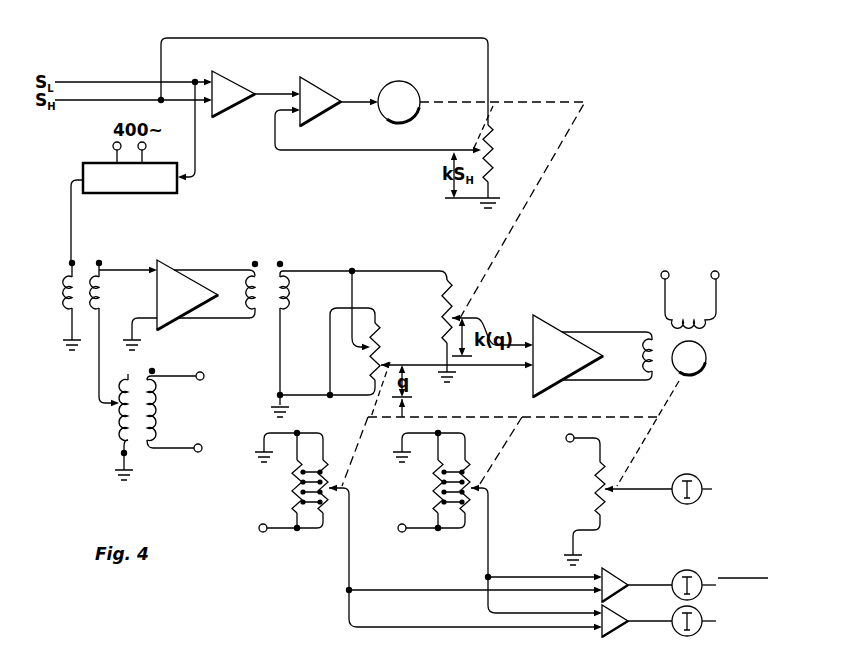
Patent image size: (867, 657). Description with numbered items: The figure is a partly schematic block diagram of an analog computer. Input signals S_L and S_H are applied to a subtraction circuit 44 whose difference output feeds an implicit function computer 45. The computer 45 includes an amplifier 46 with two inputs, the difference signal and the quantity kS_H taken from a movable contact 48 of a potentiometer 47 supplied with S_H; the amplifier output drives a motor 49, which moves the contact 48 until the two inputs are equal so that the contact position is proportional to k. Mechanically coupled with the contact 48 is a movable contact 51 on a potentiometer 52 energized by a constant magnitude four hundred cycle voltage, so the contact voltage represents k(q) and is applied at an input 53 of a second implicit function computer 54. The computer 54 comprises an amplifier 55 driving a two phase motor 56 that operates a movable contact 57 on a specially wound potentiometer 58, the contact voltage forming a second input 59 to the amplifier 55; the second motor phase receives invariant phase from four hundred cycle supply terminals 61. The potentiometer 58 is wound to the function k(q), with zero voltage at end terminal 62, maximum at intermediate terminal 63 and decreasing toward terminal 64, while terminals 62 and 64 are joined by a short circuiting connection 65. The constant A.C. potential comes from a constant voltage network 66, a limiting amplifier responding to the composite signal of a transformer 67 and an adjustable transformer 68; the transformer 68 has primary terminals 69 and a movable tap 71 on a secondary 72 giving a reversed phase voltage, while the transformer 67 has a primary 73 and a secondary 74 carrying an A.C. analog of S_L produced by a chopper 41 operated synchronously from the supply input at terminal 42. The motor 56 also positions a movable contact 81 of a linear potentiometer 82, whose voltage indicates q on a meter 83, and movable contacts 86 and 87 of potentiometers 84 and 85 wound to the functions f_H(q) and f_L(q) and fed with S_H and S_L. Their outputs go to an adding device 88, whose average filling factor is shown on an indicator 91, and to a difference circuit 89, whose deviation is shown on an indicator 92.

The chopper 41 is at (127, 193).
The 400 cycle supply input terminal 42 is at (113, 144).
The subtraction circuit 44 is at (231, 109).
The implicit function computer 45 is at (367, 135).
The amplifier 46 is at (322, 90).
The potentiometer 47 is at (494, 156).
The movable contact 48 is at (470, 149).
The motor 49 is at (414, 87).
The movable contact 51 is at (458, 315).
The potentiometer 52 is at (444, 307).
The input 53 is at (513, 343).
The second implicit function computer 54 is at (580, 409).
The amplifier 55 is at (546, 322).
The two phase motor 56 is at (706, 364).
The movable contact 57 is at (392, 361).
The specially wound potentiometer 58 is at (381, 340).
The second input 59 is at (512, 367).
The 400 cycle supply terminals 61 is at (711, 281).
The end terminal 62 is at (370, 383).
The intermediate terminal 63 is at (369, 351).
The terminal 64 is at (371, 325).
The short circuiting connection 65 is at (328, 393).
The constant voltage network 66 is at (167, 265).
The transformer 67 is at (98, 263).
The adjustable transformer 68 is at (162, 415).
The primary terminals 69 is at (191, 443).
The movable tap 71 is at (113, 405).
The secondary 72 is at (119, 427).
The primary 73 is at (65, 292).
The secondary 74 is at (107, 295).
The movable contact 81 is at (611, 492).
The linear potentiometer 82 is at (596, 478).
The meter 83 is at (684, 475).
The potentiometer 84 is at (320, 431).
The potentiometer 85 is at (462, 431).
The movable contact 86 is at (346, 489).
The movable contact 87 is at (487, 489).
The adding device 88 is at (612, 574).
The difference circuit 89 is at (612, 632).
The indicator 91 is at (685, 571).
The indicator 92 is at (690, 636).